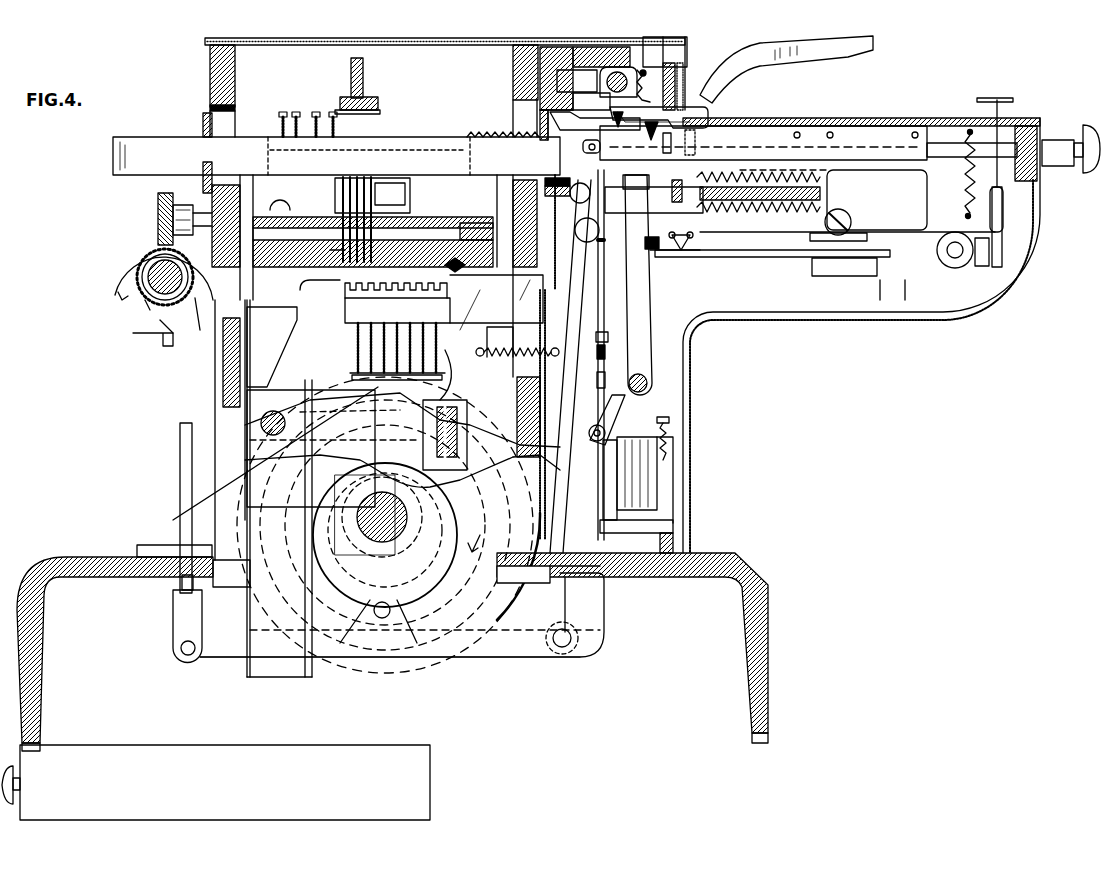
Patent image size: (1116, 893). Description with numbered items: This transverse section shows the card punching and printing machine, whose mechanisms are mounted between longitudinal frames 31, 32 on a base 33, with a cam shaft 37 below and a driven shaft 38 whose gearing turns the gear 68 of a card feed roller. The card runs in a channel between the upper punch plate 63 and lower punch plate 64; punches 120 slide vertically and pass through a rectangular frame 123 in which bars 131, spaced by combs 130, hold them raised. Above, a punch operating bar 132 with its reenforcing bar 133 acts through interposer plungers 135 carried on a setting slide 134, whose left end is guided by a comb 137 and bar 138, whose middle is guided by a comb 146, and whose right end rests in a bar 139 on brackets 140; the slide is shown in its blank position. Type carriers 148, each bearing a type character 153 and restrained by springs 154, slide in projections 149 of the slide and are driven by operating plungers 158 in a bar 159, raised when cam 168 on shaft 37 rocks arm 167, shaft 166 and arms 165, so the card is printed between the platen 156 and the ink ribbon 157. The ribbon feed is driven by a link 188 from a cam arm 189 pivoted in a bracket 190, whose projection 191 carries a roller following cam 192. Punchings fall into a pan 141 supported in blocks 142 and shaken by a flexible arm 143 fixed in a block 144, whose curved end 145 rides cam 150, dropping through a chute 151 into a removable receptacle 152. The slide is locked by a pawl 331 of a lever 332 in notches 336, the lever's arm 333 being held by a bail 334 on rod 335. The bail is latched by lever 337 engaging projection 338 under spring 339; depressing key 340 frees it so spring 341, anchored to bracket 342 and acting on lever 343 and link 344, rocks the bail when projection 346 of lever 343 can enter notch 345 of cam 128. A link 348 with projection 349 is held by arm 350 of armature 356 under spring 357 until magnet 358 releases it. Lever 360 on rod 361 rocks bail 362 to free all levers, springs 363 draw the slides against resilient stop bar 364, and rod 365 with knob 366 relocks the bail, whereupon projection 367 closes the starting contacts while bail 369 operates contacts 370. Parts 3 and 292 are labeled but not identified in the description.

The shaft 3 is at (150, 292).
The longitudinal frame 31 is at (208, 71).
The longitudinal frame 32 is at (513, 58).
The base 33 is at (130, 576).
The cam shaft 37 is at (382, 527).
The shaft 38 is at (148, 270).
The upper punch plate 63 is at (300, 232).
The lower punch plate 64 is at (313, 260).
The gear 68 is at (158, 211).
The punches 120 is at (355, 231).
The rectangular frame 123 is at (400, 201).
The cam 128 is at (425, 661).
The combs 130 is at (400, 186).
The bars 131 is at (358, 185).
The punch operating bar 132 is at (378, 100).
The reenforcing bar 133 is at (364, 64).
The setting slide 134 is at (420, 140).
The interposer plungers 135 is at (333, 112).
The comb 137 is at (203, 178).
The bar 138 is at (203, 130).
The bar 139 is at (925, 176).
The brackets 140 is at (950, 287).
The pan 141 is at (316, 272).
The blocks 142 is at (383, 276).
The flexible arm 143 is at (222, 438).
The block 144 is at (160, 552).
The curved part 145 is at (190, 315).
The comb 146 is at (538, 125).
The type carriers 148 is at (365, 361).
The projections 149 is at (618, 261).
The cam 150 is at (160, 316).
The chute 151 is at (290, 332).
The removable receptacle 152 is at (216, 782).
The type character 153 is at (397, 310).
The springs 154 is at (365, 346).
The platen 156 is at (456, 246).
The ink ribbon 157 is at (432, 286).
The operating plunger 158 is at (447, 352).
The bar 159 is at (456, 471).
The arms 165 is at (481, 411).
The shaft 166 is at (270, 432).
The arm 167 is at (370, 430).
The cam 168 is at (432, 576).
The link 188 is at (185, 492).
The cam arm 189 is at (508, 650).
The bracket 190 is at (595, 613).
The projection 191 is at (366, 648).
The cam 192 is at (346, 590).
The rod 292 is at (690, 261).
The pawl 331 is at (583, 114).
The lever 332 is at (652, 129).
The arm 333 is at (712, 112).
The bail 334 is at (652, 140).
The rod 335 is at (660, 381).
The notches 336 is at (503, 150).
The lever 337 is at (785, 226).
The projection 338 is at (648, 243).
The spring 339 is at (965, 204).
The key 340 is at (998, 99).
The spring 341 is at (500, 350).
The bracket 342 is at (476, 326).
The lever 343 is at (565, 406).
The link 344 is at (585, 299).
The notch 345 is at (519, 582).
The projection 346 is at (595, 579).
The link 348 is at (587, 339).
The projection 349 is at (612, 352).
The arm 350 is at (612, 389).
The armature 356 is at (630, 421).
The spring 357 is at (670, 441).
The magnet 358 is at (660, 469).
The lever 360 is at (794, 60).
The rod 361 is at (606, 81).
The bail 362 is at (680, 80).
The springs 363 is at (760, 185).
The resilient stop bar 364 is at (553, 178).
The rod 365 is at (966, 140).
The knob 366 is at (1090, 173).
The projection 367 is at (685, 238).
The bail 369 is at (654, 196).
The contacts 370 is at (643, 141).